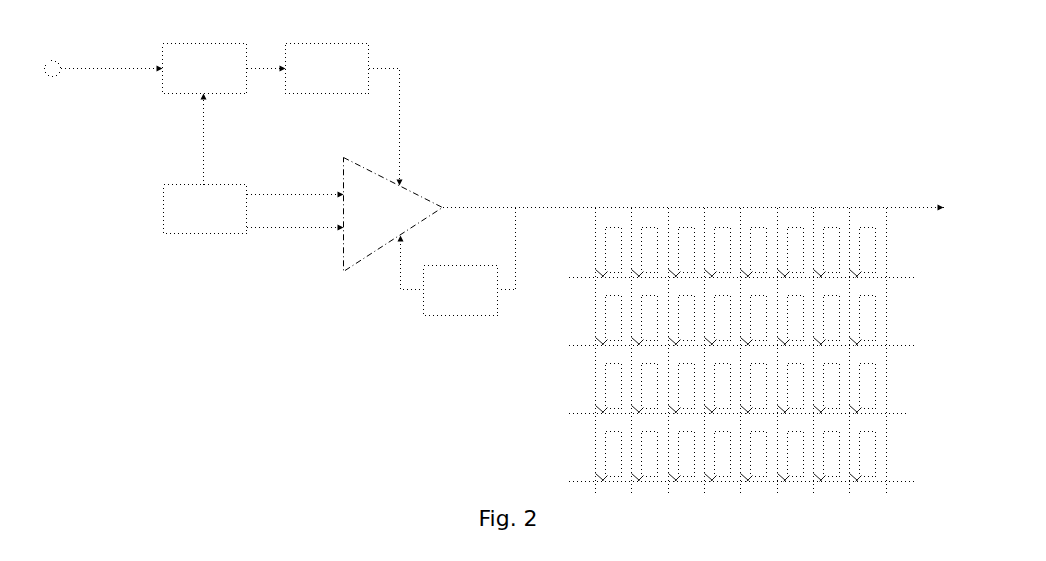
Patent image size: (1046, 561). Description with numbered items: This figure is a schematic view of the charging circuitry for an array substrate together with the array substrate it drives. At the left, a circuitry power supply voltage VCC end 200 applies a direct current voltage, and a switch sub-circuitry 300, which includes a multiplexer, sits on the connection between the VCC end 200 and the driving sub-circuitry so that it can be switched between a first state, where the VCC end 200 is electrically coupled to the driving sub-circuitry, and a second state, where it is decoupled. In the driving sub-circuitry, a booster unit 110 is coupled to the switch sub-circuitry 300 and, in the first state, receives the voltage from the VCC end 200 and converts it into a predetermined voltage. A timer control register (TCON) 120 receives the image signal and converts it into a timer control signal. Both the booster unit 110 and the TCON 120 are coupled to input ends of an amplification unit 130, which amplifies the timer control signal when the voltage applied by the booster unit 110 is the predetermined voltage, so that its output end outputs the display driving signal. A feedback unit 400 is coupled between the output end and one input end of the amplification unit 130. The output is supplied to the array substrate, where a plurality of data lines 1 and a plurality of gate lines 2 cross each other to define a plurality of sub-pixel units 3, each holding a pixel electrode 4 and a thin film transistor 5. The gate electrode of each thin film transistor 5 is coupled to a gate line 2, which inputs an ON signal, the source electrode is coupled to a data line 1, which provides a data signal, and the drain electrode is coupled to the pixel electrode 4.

The circuitry power supply voltage VCC end 200 is at (57, 60).
The switch sub-circuitry 300 is at (205, 43).
The booster unit 110 is at (346, 52).
The timer control register (TCON) 120 is at (229, 198).
The amplification unit 130 is at (408, 198).
The feedback unit 400 is at (475, 263).
The data line 1 is at (893, 246).
The gate line 2 is at (905, 284).
The sub-pixel unit 3 is at (778, 208).
The pixel electrode 4 is at (799, 219).
The thin film transistor 5 is at (780, 267).